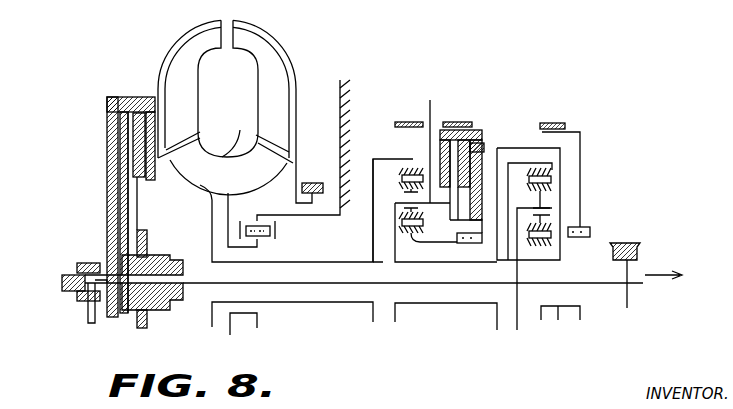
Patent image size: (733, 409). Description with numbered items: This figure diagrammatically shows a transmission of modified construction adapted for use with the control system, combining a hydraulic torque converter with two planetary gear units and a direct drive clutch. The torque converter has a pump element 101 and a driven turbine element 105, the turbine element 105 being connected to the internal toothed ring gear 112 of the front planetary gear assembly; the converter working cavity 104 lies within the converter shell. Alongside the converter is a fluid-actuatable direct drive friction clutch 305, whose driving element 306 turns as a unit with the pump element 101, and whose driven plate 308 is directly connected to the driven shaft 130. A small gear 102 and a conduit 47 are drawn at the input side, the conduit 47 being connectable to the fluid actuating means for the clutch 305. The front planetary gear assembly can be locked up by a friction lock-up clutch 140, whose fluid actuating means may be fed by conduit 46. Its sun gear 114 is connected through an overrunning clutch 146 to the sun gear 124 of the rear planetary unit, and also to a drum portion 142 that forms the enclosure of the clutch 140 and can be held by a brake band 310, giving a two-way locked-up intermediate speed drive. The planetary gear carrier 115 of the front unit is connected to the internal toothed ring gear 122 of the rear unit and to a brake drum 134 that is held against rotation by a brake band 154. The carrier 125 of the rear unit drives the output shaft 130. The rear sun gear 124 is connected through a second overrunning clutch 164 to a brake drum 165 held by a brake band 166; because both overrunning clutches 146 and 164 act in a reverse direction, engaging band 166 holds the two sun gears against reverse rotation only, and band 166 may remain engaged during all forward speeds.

The pump element 101 is at (273, 50).
The driven turbine element 105 is at (190, 88).
The rotor cavity 104 is at (226, 133).
The driving element 306 is at (107, 180).
The driven plate 308 is at (145, 185).
The direct drive friction clutch 305 is at (146, 225).
The gear 102 is at (92, 270).
The conduit 47 is at (87, 322).
The brake band 154 is at (398, 122).
The brake drum 134 is at (417, 143).
The brake band 310 is at (455, 122).
The drum portion 142 is at (482, 132).
The friction lock-up clutch 140 is at (485, 137).
The conduit 46 is at (486, 148).
The internal toothed ring gear 122 is at (545, 166).
The brake band 166 is at (553, 123).
The brake drum 165 is at (580, 132).
The internal toothed ring gear 112 is at (420, 168).
The sun gear 114 is at (440, 210).
The overrunning clutch 146 is at (483, 243).
The planetary gear carrier 115 is at (391, 232).
The carrier 125 is at (512, 255).
The sun gear 124 is at (538, 250).
The overrunning clutch 164 is at (592, 232).
The driven shaft 130 is at (645, 287).